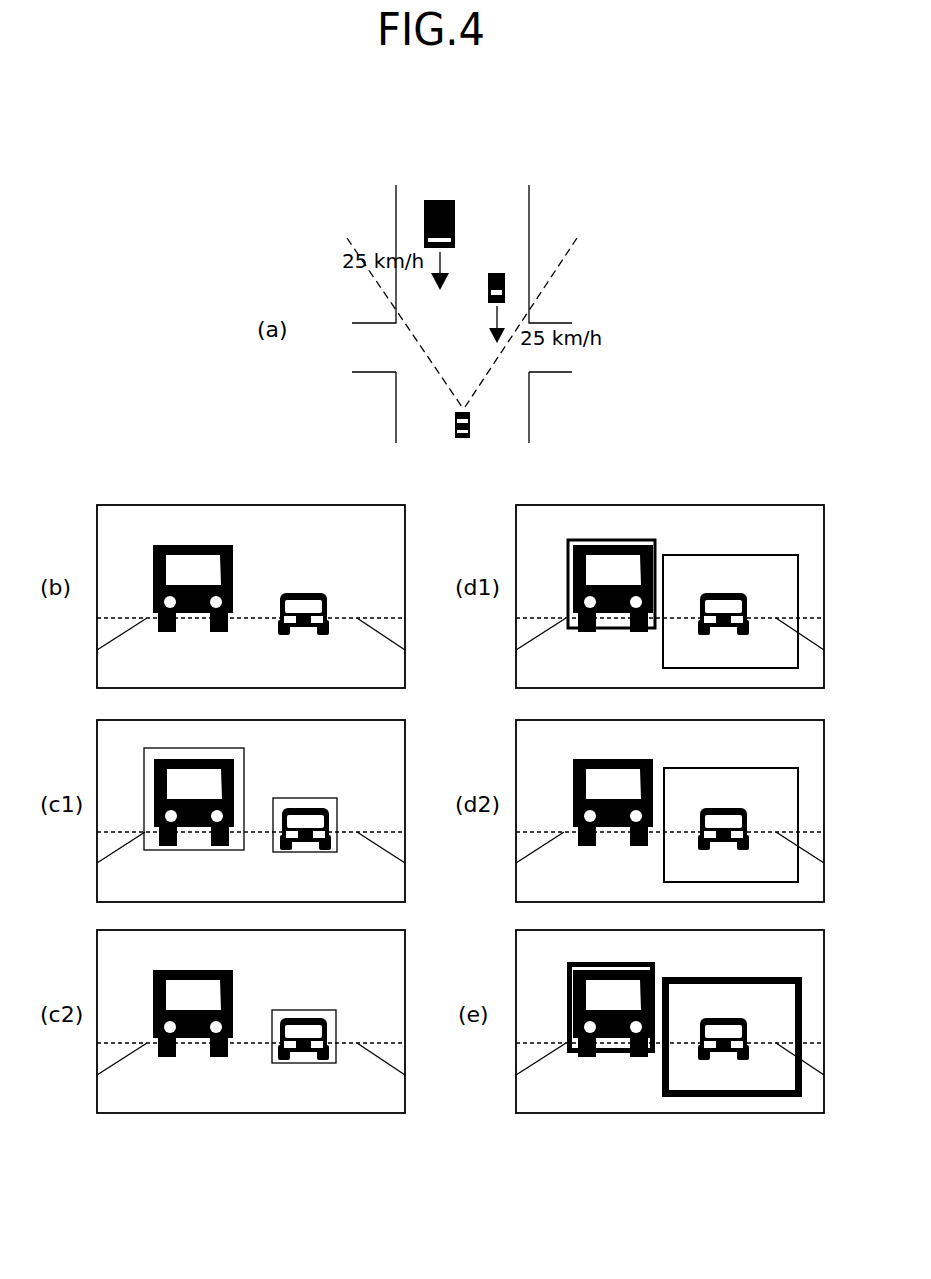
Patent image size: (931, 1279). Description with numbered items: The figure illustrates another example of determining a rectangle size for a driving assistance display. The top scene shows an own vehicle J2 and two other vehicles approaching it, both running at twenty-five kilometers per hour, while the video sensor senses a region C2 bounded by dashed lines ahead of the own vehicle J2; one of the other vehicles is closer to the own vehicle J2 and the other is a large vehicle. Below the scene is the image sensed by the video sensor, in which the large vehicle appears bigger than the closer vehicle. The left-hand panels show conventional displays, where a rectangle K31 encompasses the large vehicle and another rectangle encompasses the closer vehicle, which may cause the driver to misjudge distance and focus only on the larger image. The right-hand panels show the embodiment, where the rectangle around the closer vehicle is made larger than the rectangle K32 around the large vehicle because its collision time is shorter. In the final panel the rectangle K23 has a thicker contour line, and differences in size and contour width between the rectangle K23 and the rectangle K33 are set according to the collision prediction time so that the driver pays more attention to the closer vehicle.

The own vehicle J2 is at (470, 425).
The region C2 is at (552, 277).
The rectangle K31 is at (187, 852).
The rectangle K32 is at (568, 555).
The rectangle K33 is at (567, 995).
The rectangle K23 is at (767, 992).